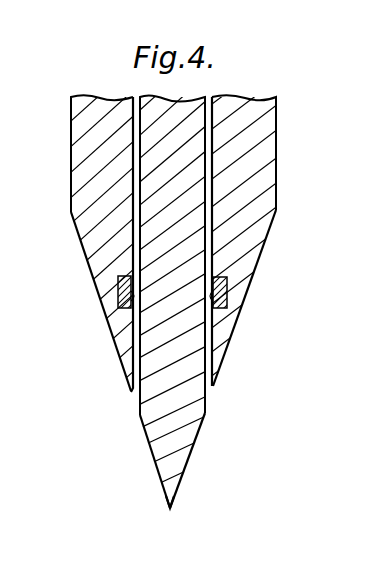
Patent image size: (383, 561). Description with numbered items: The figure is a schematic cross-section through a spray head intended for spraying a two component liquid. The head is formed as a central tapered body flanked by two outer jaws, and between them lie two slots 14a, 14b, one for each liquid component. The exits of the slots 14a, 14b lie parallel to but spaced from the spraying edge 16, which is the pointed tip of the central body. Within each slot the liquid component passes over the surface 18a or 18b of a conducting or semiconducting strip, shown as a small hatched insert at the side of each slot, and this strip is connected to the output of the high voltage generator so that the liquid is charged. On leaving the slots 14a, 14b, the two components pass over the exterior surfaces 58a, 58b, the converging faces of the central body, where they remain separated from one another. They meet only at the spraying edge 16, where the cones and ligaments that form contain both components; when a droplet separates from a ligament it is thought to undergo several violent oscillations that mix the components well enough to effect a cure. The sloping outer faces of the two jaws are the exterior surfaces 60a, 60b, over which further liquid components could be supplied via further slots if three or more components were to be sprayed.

The slot 14a is at (133, 337).
The slot 14b is at (207, 342).
The spraying edge 16 is at (169, 510).
The surface of conducting or semiconducting strip 18a is at (118, 302).
The surface of conducting or semiconducting strip 18b is at (227, 298).
The exterior surface 58a is at (146, 439).
The exterior surface 58b is at (191, 442).
The exterior surface 60a is at (81, 242).
The exterior surface 60b is at (266, 238).